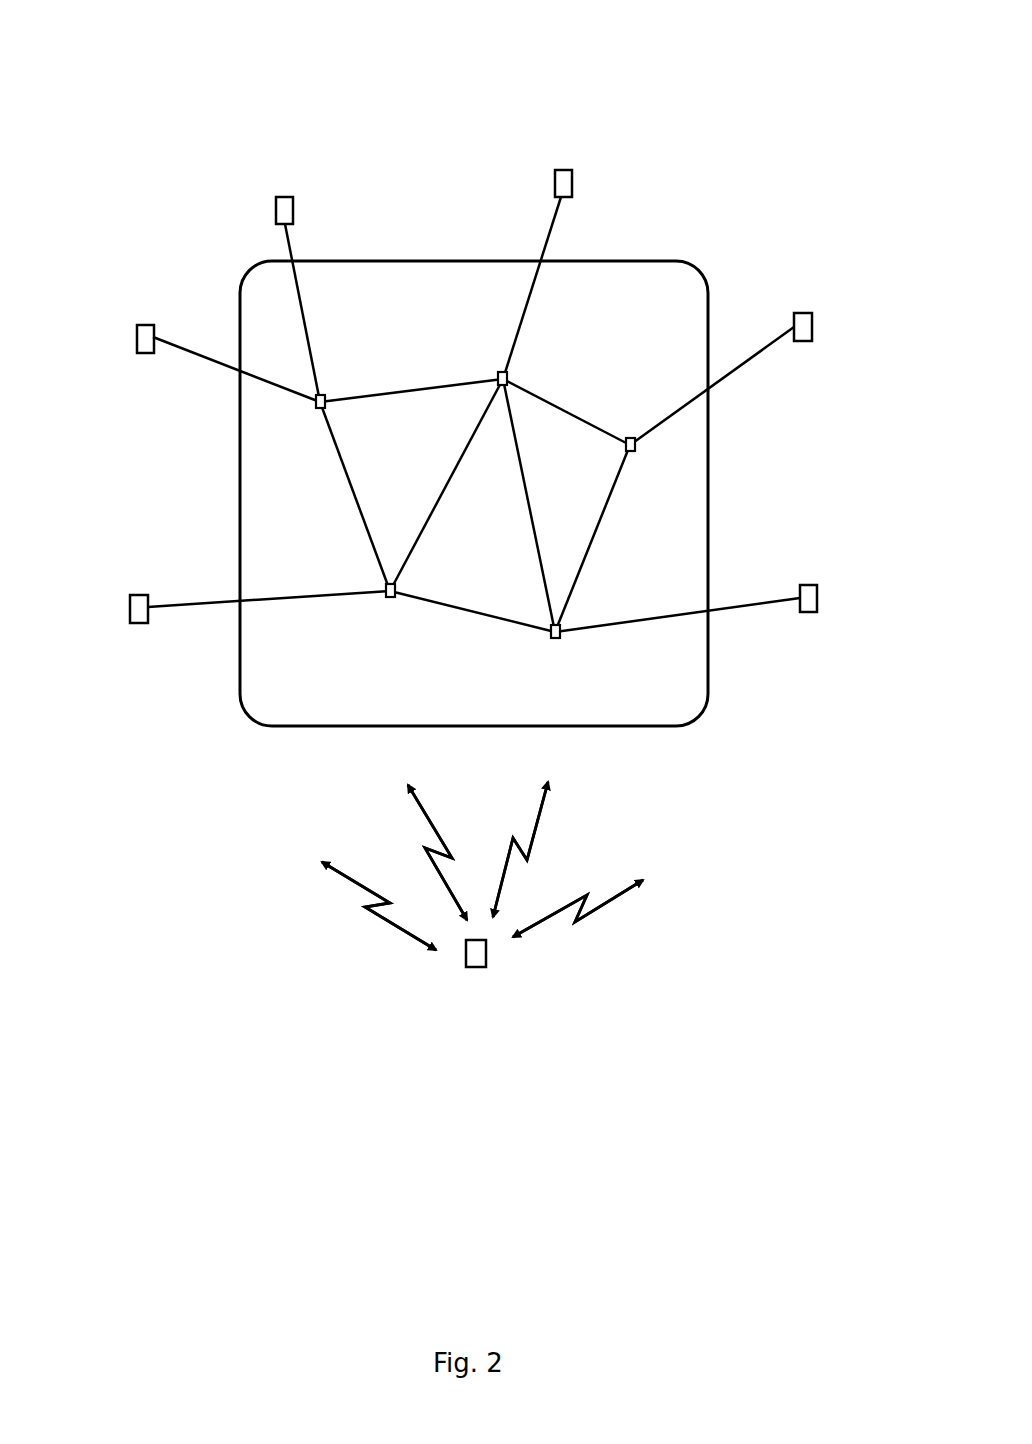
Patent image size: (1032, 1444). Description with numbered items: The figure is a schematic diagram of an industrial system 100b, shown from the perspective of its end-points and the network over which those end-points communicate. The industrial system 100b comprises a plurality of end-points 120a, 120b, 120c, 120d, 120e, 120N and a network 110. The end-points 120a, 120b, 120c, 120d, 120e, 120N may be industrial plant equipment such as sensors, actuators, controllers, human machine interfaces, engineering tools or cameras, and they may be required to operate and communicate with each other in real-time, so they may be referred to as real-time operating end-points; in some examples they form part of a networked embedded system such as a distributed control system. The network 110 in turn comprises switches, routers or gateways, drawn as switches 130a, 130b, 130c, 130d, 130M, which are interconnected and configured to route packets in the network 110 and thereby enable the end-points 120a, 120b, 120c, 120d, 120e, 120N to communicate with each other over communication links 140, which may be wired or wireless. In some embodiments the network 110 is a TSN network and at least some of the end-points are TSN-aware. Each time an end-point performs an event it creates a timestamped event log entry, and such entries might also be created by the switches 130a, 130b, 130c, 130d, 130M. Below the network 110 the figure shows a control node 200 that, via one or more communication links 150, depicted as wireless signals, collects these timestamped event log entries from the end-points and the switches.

The industrial system 100b is at (758, 66).
The network 110 is at (313, 704).
The end-point 120a is at (130, 600).
The end-point 120b is at (137, 330).
The end-point 120c is at (293, 201).
The end-point 120d is at (572, 173).
The end-point 120e is at (812, 316).
The end-point 120N is at (817, 590).
The switch 130a is at (327, 393).
The switch 130b is at (500, 372).
The switch 130c is at (628, 438).
The switch 130d is at (393, 602).
The switch 130M is at (555, 640).
The communication links 140 is at (677, 613).
The communication links 150 is at (623, 895).
The control node 200 is at (475, 967).